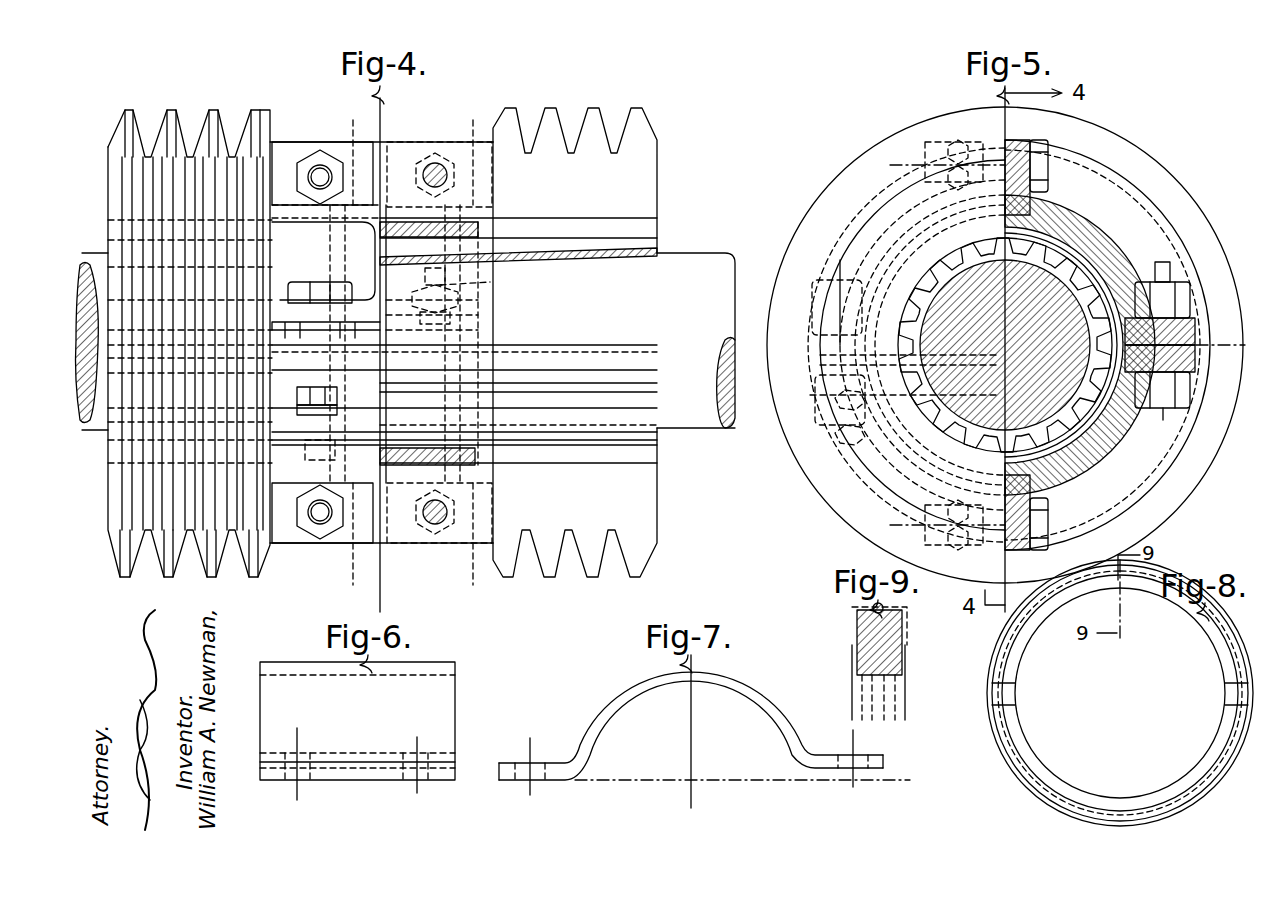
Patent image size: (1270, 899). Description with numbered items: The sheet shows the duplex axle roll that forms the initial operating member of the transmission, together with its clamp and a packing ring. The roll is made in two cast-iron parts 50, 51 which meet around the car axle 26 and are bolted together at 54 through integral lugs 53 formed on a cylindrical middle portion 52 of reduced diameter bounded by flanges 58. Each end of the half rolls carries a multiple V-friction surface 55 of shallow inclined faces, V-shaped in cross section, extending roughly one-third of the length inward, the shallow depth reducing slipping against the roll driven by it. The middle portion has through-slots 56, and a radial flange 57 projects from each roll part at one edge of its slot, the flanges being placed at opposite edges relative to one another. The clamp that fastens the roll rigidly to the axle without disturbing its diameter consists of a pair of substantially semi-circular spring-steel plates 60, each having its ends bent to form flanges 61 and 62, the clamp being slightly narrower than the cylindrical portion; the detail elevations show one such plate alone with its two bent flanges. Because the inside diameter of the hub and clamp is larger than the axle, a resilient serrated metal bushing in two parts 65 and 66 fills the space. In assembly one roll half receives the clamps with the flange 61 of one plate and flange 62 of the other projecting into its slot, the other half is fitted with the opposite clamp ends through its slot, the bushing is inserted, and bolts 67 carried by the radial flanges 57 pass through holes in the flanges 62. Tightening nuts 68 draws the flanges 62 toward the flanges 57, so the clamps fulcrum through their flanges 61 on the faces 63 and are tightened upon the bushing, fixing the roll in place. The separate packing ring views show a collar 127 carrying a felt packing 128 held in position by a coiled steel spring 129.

In FIG. 5, the axle 26 is at (880, 215).
In FIG. 4, the roll part 50 is at (175, 112).
In FIG. 5, the roll part 50 is at (840, 215).
In FIG. 4, the roll part 51 is at (553, 112).
In FIG. 5, the roll part 51 is at (1150, 188).
In FIG. 4, the cylindrical middle portion 52 is at (407, 345).
In FIG. 5, the cylindrical middle portion 52 is at (850, 240).
In FIG. 4, the integral lugs 53 is at (640, 225).
In FIG. 5, the integral lugs 53 is at (1000, 190).
In FIG. 4, the bolts 54 is at (320, 165).
In FIG. 5, the bolts 54 is at (955, 160).
In FIG. 4, the multiple V-friction surface 55 is at (236, 116).
In FIG. 5, the multiple V-friction surface 55 is at (800, 245).
In FIG. 4, the through-slots 56 is at (490, 330).
In FIG. 5, the through-slots 56 is at (875, 395).
In FIG. 4, the radial flange 57 is at (290, 330).
In FIG. 5, the radial flange 57 is at (870, 330).
In FIG. 4, the flanges 58 is at (290, 147).
In FIG. 5, the flanges 58 is at (1005, 150).
In FIG. 4, the semi-circular plates 60 is at (399, 222).
In FIG. 5, the semi-circular plates 60 is at (1140, 255).
In FIG. 6, the semi-circular plates 60 is at (415, 698).
In FIG. 7, the semi-circular plates 60 is at (738, 682).
In FIG. 4, the flange 61 is at (490, 405).
In FIG. 5, the flange 61 is at (850, 320).
In FIG. 6, the flange 61 is at (363, 778).
In FIG. 7, the flange 61 is at (510, 780).
In FIG. 4, the flange 62 is at (482, 315).
In FIG. 5, the flange 62 is at (880, 365).
In FIG. 6, the flange 62 is at (358, 752).
In FIG. 7, the flange 62 is at (870, 770).
In FIG. 4, the faces 63 is at (344, 325).
In FIG. 5, the faces 63 is at (850, 305).
In FIG. 4, the bushing part 65 is at (600, 250).
In FIG. 5, the bushing part 65 is at (1110, 200).
In FIG. 4, the bushing part 66 is at (605, 400).
In FIG. 5, the bushing part 66 is at (900, 440).
In FIG. 4, the bolts 67 is at (325, 285).
In FIG. 5, the bolts 67 is at (860, 420).
In FIG. 4, the nuts 68 is at (470, 302).
In FIG. 5, the nuts 68 is at (855, 398).
In FIG. 9, the collar 127 is at (850, 630).
In FIG. 8, the collar 127 is at (1205, 610).
In FIG. 9, the packing 128 is at (905, 665).
In FIG. 8, the packing 128 is at (1020, 648).
In FIG. 9, the coiled steel spring 129 is at (870, 608).
In FIG. 8, the coiled steel spring 129 is at (1010, 757).